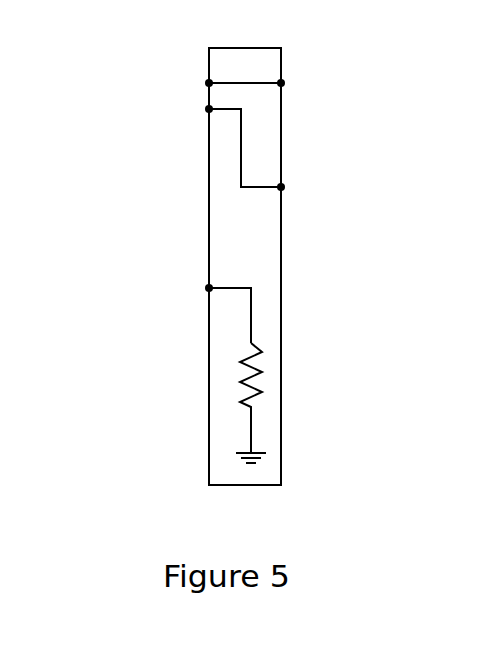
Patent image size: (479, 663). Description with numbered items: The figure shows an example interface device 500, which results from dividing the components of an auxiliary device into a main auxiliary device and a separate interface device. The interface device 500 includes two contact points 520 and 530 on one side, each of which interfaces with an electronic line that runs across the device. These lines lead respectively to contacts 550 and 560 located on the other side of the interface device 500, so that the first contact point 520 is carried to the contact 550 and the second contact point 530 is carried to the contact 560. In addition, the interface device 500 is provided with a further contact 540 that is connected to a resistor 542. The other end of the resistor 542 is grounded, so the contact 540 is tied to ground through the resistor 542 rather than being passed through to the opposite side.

The interface device 500 is at (311, 55).
The contact point 520 is at (209, 83).
The contact point 530 is at (209, 109).
The contact 540 is at (209, 288).
The resistor 542 is at (243, 382).
The contact 550 is at (281, 83).
The contact 560 is at (281, 187).